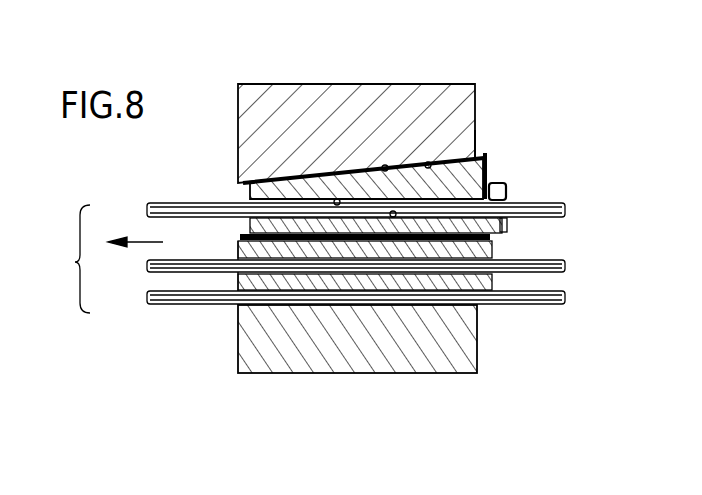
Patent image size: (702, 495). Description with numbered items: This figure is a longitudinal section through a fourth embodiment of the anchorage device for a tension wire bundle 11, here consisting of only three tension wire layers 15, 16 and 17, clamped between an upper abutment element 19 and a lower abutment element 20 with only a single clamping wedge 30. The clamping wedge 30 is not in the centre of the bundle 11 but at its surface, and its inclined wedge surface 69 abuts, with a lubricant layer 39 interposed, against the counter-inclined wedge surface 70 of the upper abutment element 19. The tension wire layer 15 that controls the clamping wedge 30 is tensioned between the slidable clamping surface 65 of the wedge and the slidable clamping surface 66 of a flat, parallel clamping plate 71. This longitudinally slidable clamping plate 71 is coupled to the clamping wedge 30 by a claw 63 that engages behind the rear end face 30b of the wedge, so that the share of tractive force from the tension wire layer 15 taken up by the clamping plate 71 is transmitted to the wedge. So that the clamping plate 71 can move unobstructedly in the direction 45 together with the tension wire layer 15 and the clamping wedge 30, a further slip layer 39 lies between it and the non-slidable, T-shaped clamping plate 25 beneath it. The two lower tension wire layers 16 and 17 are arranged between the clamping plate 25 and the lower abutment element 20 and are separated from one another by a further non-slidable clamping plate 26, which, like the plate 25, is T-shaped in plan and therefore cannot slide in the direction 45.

The tension wire bundle 11 is at (70, 259).
The tension wire layer 15 is at (566, 204).
The tension wire layer 16 is at (565, 266).
The tension wire layer 17 is at (562, 298).
The upper abutment element 19 is at (316, 90).
The lower abutment element 20 is at (272, 360).
The non-slidable clamping plate 25 is at (238, 247).
The non-slidable clamping plate 26 is at (248, 280).
The clamping wedge 30 is at (486, 157).
The rear end face 30b is at (488, 165).
The lubricant layer 39 is at (241, 182).
The direction 45 is at (138, 238).
The claw 63 is at (507, 192).
The slidable clamping surface 65 is at (340, 199).
The slidable clamping surface 66 is at (392, 216).
The inclined wedge surface 69 is at (475, 129).
The counter-inclined wedge surface 70 is at (389, 168).
The clamping plate 71 is at (506, 226).